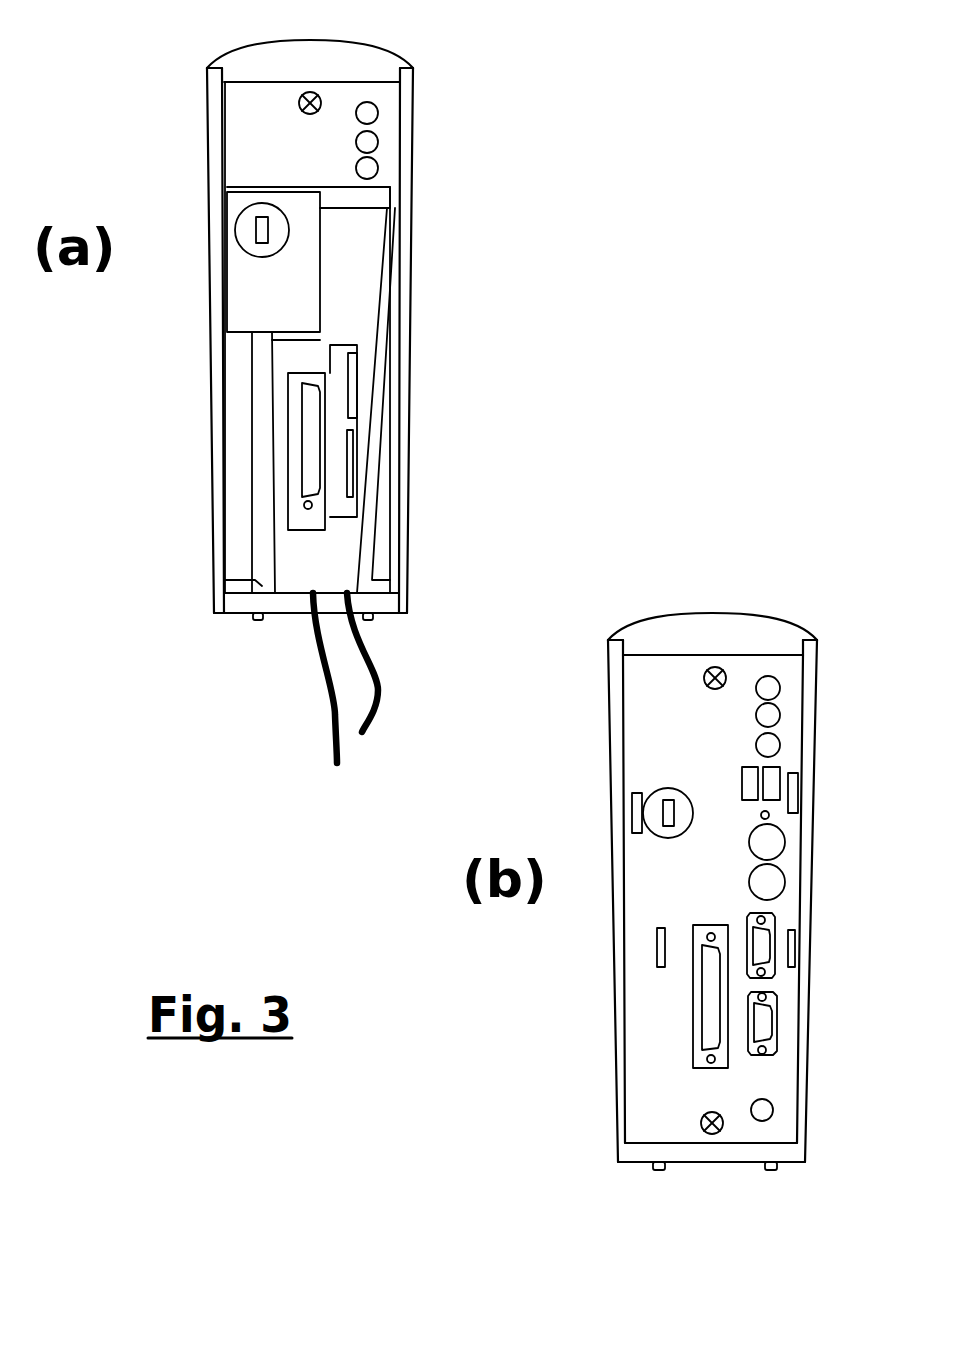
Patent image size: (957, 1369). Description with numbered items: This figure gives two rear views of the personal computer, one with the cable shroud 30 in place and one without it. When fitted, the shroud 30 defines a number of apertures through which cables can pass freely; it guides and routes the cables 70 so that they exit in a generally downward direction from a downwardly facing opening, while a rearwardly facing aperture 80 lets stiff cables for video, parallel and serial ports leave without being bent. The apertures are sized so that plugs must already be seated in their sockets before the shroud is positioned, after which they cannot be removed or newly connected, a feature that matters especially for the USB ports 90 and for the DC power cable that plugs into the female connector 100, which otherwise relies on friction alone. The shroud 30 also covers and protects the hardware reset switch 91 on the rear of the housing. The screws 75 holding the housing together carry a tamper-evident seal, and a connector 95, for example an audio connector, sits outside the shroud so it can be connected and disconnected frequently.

The cable shroud 30 is at (387, 250).
The cables 70 is at (380, 680).
The screws 75 is at (716, 667).
The rearwardly facing aperture 80 is at (355, 420).
The USB ports 90 is at (783, 778).
The hardware reset switch 91 is at (770, 817).
The connector 95 is at (378, 117).
The female connector 100 is at (775, 1105).